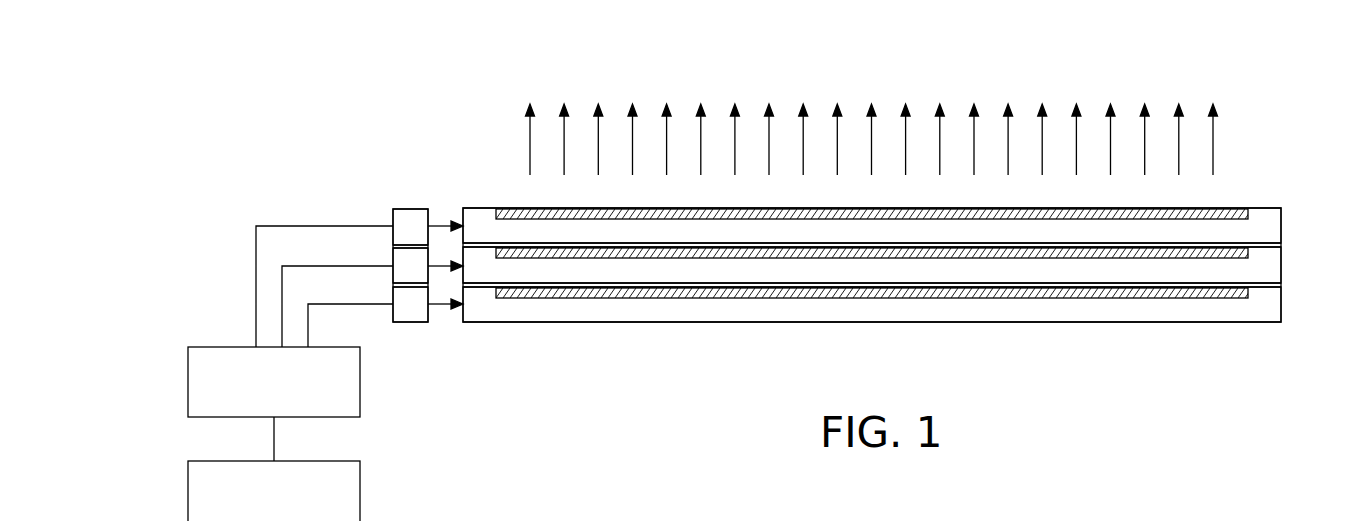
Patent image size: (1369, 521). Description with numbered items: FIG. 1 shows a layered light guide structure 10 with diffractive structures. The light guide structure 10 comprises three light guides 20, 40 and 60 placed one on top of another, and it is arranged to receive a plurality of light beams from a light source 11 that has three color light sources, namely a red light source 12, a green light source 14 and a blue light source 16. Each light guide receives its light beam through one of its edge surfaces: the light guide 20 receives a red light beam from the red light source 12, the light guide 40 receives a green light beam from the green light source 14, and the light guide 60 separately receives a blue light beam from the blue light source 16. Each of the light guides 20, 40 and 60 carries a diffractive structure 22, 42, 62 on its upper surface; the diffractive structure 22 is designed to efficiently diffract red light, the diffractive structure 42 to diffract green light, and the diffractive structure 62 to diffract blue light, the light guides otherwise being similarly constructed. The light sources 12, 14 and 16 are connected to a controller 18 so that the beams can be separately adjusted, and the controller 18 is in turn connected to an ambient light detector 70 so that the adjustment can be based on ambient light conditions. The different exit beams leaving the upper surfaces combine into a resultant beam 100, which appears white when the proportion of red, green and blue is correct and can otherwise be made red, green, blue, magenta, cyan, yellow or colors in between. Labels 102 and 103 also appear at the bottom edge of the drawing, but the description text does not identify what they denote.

The light guide structure 10 is at (1300, 146).
The light source 11 is at (413, 177).
The red light source 12 is at (403, 208).
The green light source 14 is at (393, 257).
The blue light source 16 is at (410, 322).
The controller 18 is at (360, 395).
The light guide 20 is at (1281, 223).
The diffractive structure 22 is at (513, 208).
The light guide 40 is at (1281, 258).
The diffractive structure 42 is at (588, 253).
The light guide 60 is at (1281, 300).
The diffractive structure 62 is at (642, 297).
The ambient light detector 70 is at (360, 505).
The resultant beam 100 is at (1213, 85).
The light output 102 is at (1032, 515).
The light output 103 is at (885, 515).